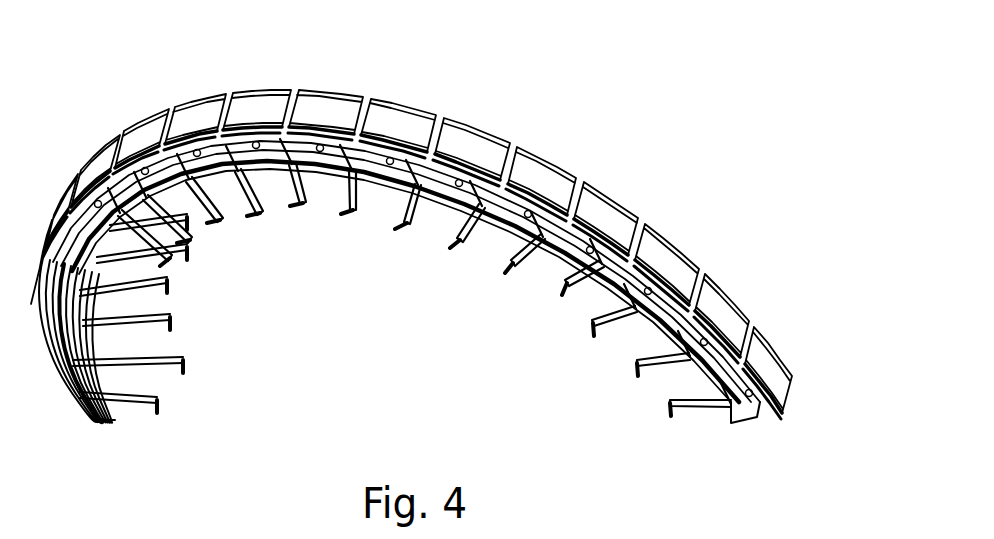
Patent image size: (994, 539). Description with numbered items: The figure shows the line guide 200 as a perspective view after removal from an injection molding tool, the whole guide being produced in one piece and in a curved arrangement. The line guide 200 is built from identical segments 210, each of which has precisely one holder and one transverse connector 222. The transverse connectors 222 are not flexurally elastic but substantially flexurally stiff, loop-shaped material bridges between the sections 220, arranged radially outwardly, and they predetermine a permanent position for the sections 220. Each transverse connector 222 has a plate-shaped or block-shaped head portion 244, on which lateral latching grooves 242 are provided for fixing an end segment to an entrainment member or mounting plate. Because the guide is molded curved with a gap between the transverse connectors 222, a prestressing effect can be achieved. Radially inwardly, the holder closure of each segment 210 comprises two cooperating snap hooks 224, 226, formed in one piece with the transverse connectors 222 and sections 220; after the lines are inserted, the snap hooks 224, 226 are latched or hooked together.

The line guide 200 is at (148, 92).
The segment 210 is at (580, 175).
The section 220 is at (130, 333).
The transverse connector 222 is at (417, 103).
The snap hook 224 is at (157, 393).
The snap hook 226 is at (137, 363).
The latching groove 242 is at (757, 417).
The head portion 244 is at (325, 110).